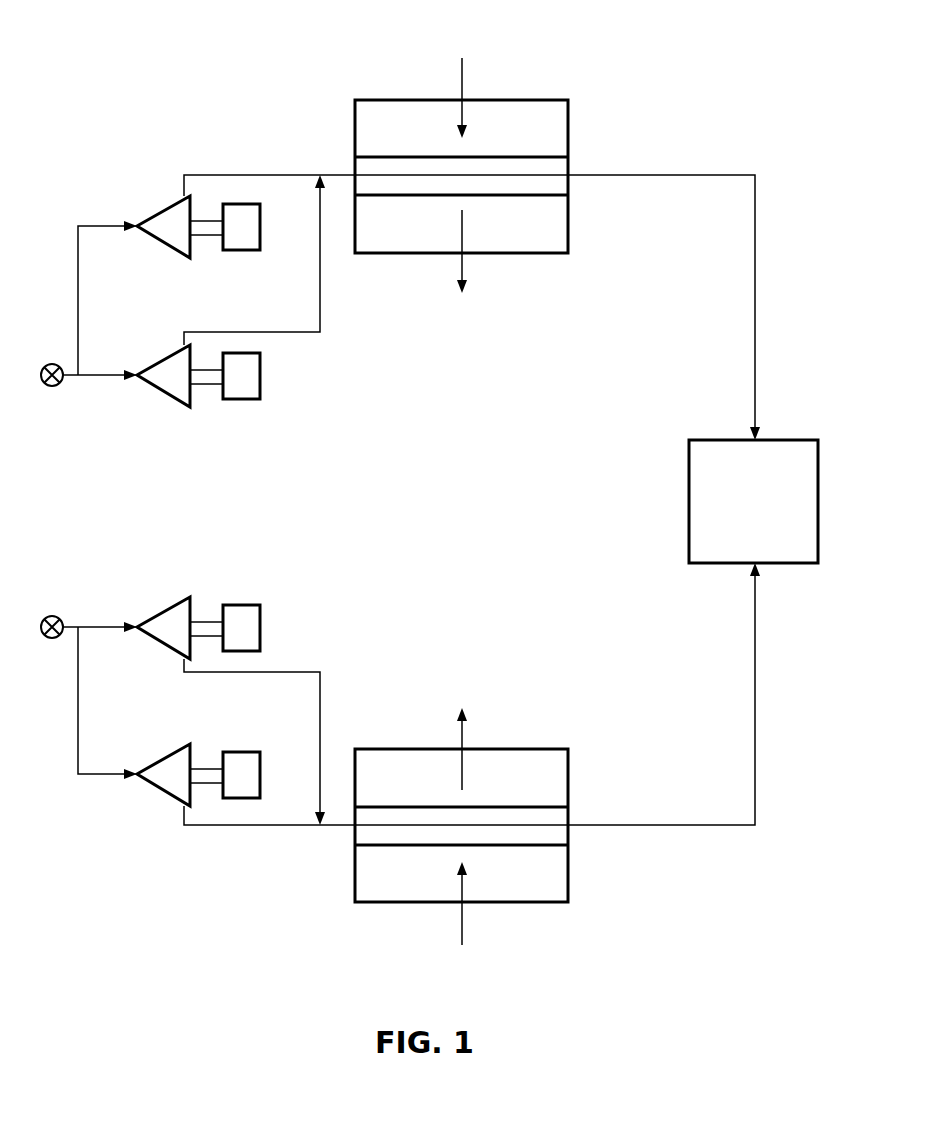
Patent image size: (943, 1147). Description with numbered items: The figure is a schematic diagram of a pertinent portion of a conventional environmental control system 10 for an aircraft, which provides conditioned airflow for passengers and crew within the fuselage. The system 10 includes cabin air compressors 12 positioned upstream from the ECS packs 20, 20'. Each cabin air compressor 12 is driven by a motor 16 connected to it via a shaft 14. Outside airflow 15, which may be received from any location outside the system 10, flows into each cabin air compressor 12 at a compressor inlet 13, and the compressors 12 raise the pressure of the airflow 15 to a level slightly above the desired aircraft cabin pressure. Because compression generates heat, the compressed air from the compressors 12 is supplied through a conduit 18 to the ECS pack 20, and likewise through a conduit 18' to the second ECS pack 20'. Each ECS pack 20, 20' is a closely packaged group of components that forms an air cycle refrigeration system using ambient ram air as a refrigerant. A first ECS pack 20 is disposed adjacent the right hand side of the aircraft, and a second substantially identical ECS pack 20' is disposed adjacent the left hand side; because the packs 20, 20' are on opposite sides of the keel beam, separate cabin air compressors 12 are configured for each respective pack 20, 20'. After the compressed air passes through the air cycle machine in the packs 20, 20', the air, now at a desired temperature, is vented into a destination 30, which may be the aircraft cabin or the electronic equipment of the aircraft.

The environmental control system 10 is at (150, 32).
The cabin air compressor 12 is at (168, 208).
The compressor inlet 13 is at (136, 229).
The shaft 14 is at (202, 240).
The outside airflow 15 is at (78, 300).
The motor 16 is at (261, 226).
The conduit 18 is at (472, 294).
The conduit 18' is at (472, 712).
The ECS pack 20 is at (487, 160).
The second ECS pack 20' is at (441, 844).
The destination 30 is at (790, 439).